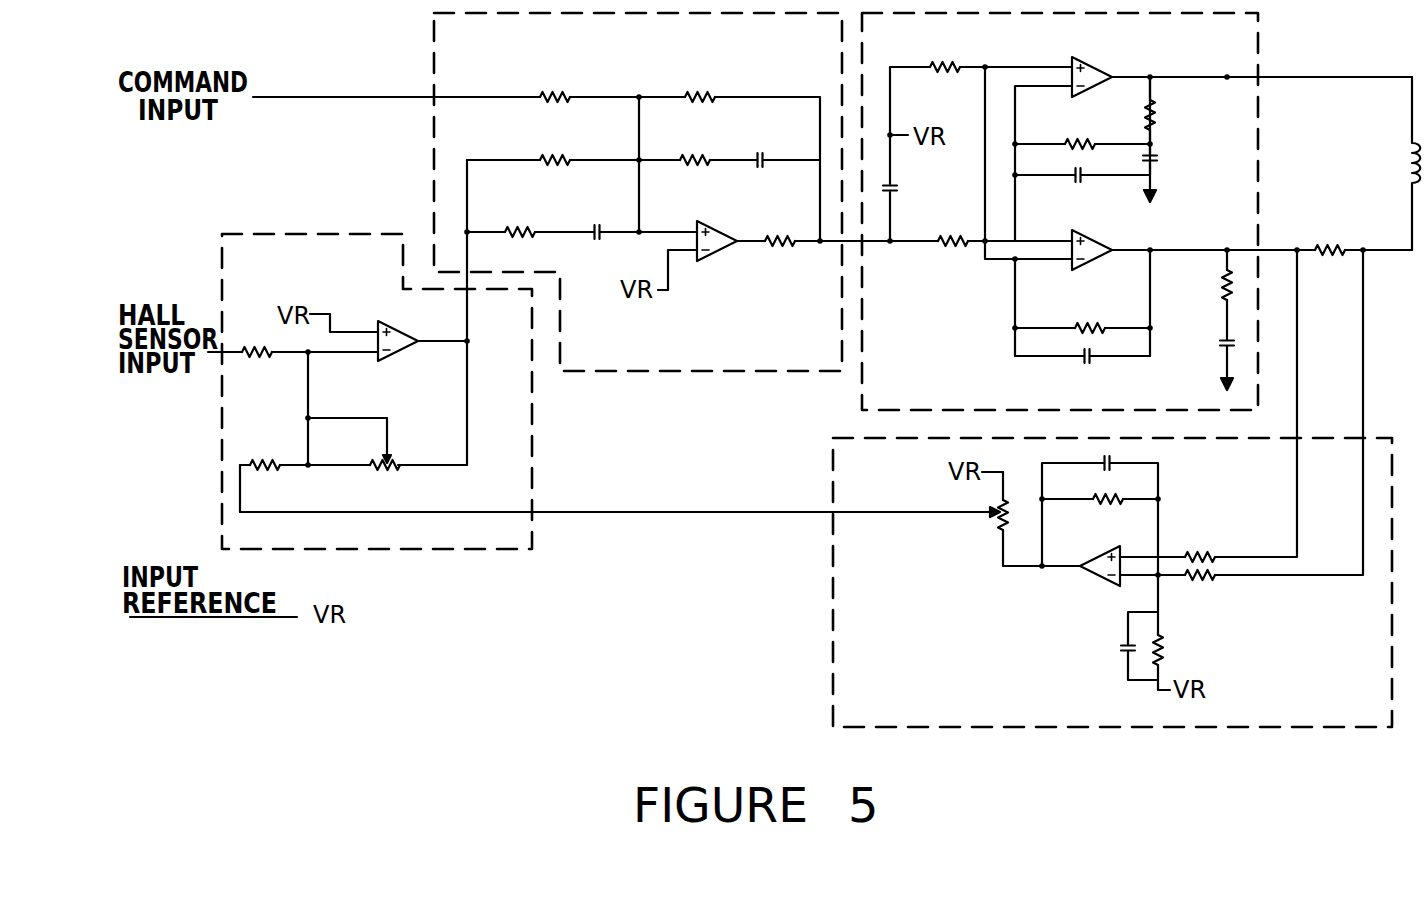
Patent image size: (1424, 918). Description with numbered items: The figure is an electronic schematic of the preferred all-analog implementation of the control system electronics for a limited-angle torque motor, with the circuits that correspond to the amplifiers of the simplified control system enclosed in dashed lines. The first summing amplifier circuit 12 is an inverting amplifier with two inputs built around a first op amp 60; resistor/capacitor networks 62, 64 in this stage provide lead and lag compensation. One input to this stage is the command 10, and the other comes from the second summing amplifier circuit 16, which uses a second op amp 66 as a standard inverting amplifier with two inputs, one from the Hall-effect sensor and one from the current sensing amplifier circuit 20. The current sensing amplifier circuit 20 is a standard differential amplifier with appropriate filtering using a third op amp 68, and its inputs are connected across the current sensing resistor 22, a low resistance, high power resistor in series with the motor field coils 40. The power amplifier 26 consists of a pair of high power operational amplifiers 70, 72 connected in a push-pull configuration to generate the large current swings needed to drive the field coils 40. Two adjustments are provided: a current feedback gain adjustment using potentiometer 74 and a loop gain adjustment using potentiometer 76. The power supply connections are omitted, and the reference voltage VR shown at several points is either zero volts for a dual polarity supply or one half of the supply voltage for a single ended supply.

The command 10 is at (373, 96).
The first summing amplifier circuit 12 is at (668, 15).
The second summing amplifier circuit 16 is at (370, 236).
The current sensing amplifier circuit 20 is at (910, 440).
The current sensing resistor 22 is at (1350, 242).
The power amplifier 26 is at (1082, 58).
The field coils 40 is at (1411, 181).
The first op amp 60 is at (702, 259).
The resistor/capacitor network 62 is at (688, 160).
The resistor/capacitor network 64 is at (523, 232).
The second op amp 66 is at (382, 359).
The third op amp 68 is at (1110, 582).
The high power operational amplifier 70 is at (1083, 88).
The high power operational amplifier 72 is at (1086, 262).
The potentiometer 74 is at (1003, 530).
The potentiometer 76 is at (396, 467).